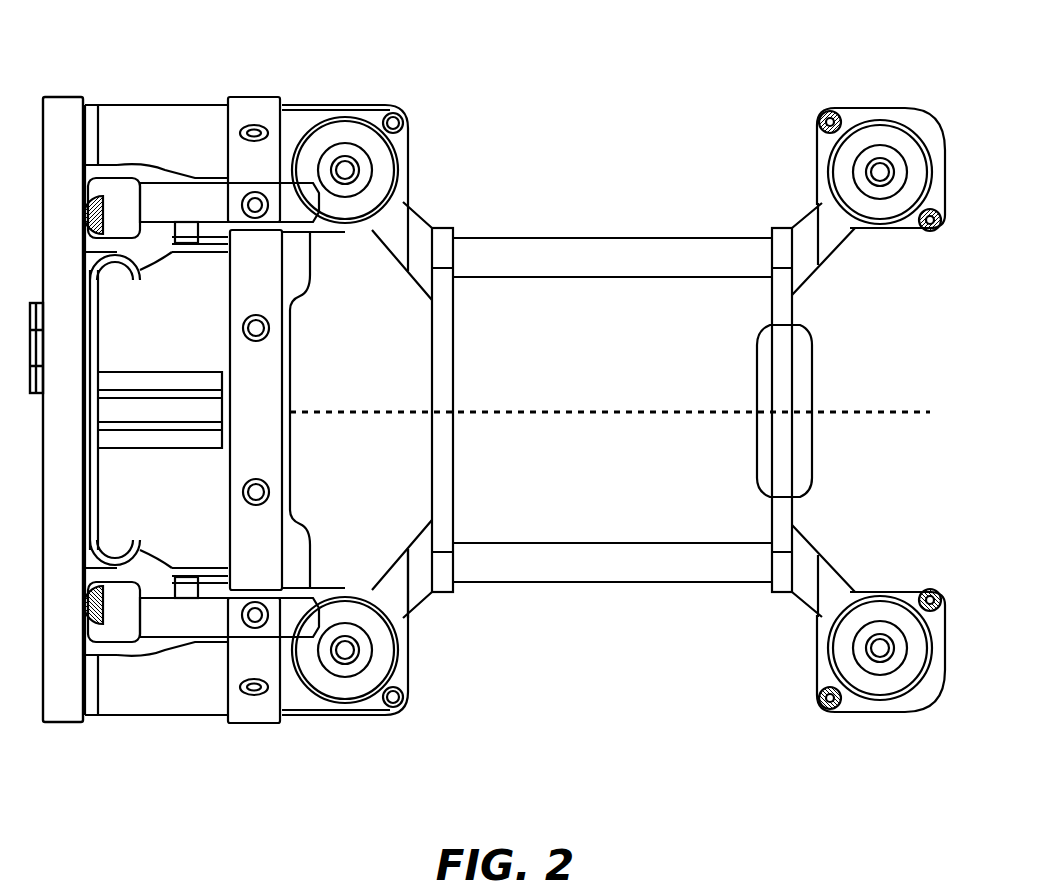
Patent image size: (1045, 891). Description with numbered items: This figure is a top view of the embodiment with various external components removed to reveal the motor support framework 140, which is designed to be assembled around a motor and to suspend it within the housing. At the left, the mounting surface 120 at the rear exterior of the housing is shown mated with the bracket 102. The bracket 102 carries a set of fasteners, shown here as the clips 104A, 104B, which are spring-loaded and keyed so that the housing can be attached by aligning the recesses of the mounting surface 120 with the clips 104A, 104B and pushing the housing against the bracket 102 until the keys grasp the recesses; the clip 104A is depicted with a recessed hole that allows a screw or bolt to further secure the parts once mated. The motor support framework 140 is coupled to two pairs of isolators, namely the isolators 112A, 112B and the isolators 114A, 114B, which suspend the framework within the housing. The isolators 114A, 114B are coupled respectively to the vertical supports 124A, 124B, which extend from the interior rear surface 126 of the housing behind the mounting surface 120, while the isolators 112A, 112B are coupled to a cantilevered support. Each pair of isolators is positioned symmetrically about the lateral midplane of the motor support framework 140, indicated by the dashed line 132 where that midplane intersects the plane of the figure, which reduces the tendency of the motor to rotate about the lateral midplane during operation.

The bracket 102 is at (66, 413).
The clip 104A is at (205, 623).
The clip 104B is at (205, 213).
The isolator 112A is at (848, 652).
The isolator 112B is at (848, 167).
The isolator 114A is at (382, 640).
The isolator 114B is at (382, 157).
The mounting surface 120 is at (95, 716).
The vertical support 124A is at (298, 719).
The vertical support 124B is at (299, 95).
The interior rear surface 126 is at (300, 371).
The dashed line 132 is at (614, 417).
The motor support framework 140 is at (626, 267).